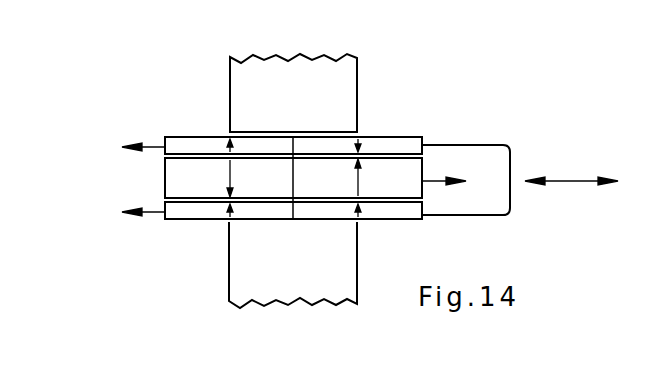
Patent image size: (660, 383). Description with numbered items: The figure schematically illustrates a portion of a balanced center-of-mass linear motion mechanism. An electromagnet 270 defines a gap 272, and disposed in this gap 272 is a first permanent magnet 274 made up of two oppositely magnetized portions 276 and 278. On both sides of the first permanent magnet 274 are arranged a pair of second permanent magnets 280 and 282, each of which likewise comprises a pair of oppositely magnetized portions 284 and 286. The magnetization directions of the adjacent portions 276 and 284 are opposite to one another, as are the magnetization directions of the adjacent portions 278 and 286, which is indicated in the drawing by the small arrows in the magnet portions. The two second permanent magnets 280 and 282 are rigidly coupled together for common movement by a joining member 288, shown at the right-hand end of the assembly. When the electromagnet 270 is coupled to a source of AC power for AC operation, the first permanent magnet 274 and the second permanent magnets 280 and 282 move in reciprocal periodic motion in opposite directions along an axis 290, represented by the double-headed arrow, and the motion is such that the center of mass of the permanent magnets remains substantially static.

The electromagnet 270 is at (244, 77).
The gap 272 is at (256, 224).
The first permanent magnet 274 is at (176, 176).
The oppositely magnetized portion 276 is at (279, 205).
The oppositely magnetized portion 278 is at (386, 182).
The second permanent magnet 280 is at (181, 148).
The second permanent magnet 282 is at (174, 221).
The oppositely magnetized portion 284 is at (207, 215).
The oppositely magnetized portion 286 is at (331, 145).
The joining member 288 is at (512, 165).
The axis 290 is at (579, 183).